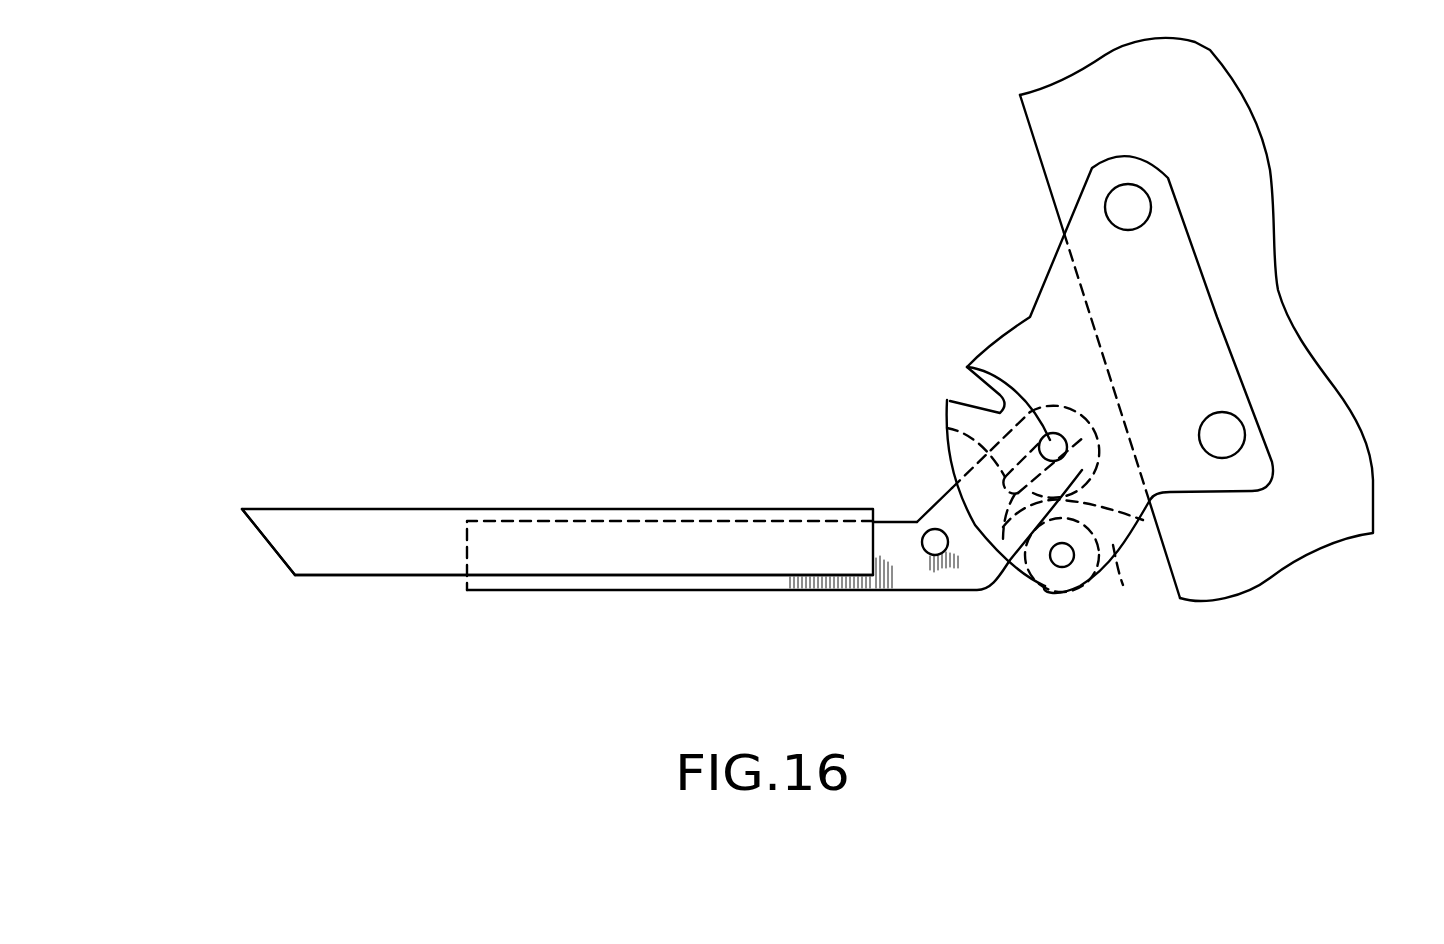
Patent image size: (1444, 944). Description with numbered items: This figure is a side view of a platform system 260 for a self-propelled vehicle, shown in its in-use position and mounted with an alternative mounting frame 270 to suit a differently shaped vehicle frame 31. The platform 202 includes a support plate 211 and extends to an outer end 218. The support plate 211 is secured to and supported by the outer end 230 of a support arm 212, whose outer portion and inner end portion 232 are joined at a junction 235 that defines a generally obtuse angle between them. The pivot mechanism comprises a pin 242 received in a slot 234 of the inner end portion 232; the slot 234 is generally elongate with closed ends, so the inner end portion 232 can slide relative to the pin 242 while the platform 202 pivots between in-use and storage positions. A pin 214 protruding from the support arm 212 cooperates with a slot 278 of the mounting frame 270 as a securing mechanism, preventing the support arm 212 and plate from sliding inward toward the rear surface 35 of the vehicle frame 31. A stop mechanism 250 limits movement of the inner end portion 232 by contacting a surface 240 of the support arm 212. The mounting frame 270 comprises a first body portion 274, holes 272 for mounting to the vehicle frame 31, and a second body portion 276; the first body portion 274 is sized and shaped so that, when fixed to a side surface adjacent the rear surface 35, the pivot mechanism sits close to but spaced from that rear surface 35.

The platform system 260 is at (565, 259).
The platform 202 is at (402, 505).
The outer end 218 is at (270, 544).
The support plate 211 is at (365, 560).
The outer end 230 is at (648, 560).
The support arm 212 is at (529, 600).
The pin 214 is at (927, 552).
The junction 235 is at (915, 515).
The second body portion 276 is at (953, 453).
The inner end portion 232 is at (947, 428).
The slot 278 is at (953, 402).
The pin 242 is at (967, 367).
The mounting frame 270 is at (1014, 305).
The first body portion 274 is at (1185, 334).
The holes 272 is at (1143, 200).
The rear surface 35 is at (1043, 167).
The vehicle frame 31 is at (1270, 287).
The surface 240 is at (1147, 522).
The stop mechanism 250 is at (1087, 573).
The slot 234 is at (1003, 540).